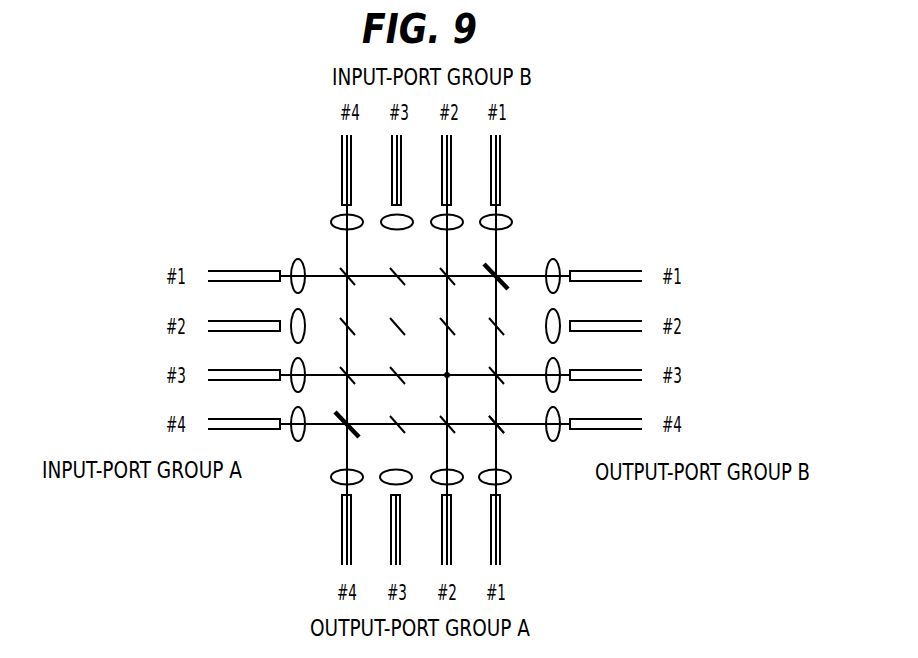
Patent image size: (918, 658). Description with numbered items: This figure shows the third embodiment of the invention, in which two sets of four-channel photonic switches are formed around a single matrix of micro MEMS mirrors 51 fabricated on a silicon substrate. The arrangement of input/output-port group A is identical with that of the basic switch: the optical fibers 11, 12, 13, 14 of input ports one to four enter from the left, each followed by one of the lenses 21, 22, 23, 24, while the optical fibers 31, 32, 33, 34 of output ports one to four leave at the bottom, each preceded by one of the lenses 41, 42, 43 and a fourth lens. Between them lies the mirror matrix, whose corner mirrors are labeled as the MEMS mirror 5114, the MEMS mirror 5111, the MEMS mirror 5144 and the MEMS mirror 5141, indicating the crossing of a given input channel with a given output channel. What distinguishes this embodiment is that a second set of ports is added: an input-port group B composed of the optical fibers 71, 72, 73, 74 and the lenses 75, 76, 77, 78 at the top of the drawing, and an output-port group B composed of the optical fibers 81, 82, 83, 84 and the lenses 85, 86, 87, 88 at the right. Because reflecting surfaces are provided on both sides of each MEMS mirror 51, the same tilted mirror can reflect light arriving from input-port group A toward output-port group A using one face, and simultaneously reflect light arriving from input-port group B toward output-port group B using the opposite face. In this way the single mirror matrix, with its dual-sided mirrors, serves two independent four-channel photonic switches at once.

The optical fiber of input port #1 11 is at (237, 270).
The optical fiber of input port #2 12 is at (237, 320).
The optical fiber of input port #3 13 is at (237, 369).
The optical fiber of input port #4 14 is at (237, 418).
The lens 21 is at (291, 268).
The lens 22 is at (291, 318).
The lens 23 is at (291, 367).
The lens 24 is at (291, 416).
The optical fiber of output port #1 31 is at (501, 528).
The optical fiber of output port #2 32 is at (452, 528).
The optical fiber of output port #3 33 is at (401, 528).
The optical fiber of output port #4 34 is at (352, 528).
The lens 41 is at (505, 481).
The lens 42 is at (455, 483).
The lens 43 is at (404, 483).
The micro MEMS mirror 51 is at (438, 334).
The micro MEMS mirror 51_14 5114 is at (351, 272).
The micro MEMS mirror 51_11 5111 is at (500, 272).
The micro MEMS mirror 51_44 5144 is at (352, 419).
The micro MEMS mirror 51_41 5141 is at (500, 419).
The optical fiber 71 is at (502, 146).
The optical fiber 72 is at (453, 146).
The optical fiber 73 is at (403, 146).
The optical fiber 74 is at (353, 146).
The lens 75 is at (504, 217).
The lens 76 is at (455, 217).
The lens 77 is at (405, 217).
The lens 78 is at (355, 217).
The optical fiber 81 is at (606, 271).
The optical fiber 82 is at (606, 321).
The optical fiber 83 is at (606, 370).
The optical fiber 84 is at (606, 419).
The lens 85 is at (557, 264).
The lens 86 is at (557, 320).
The lens 87 is at (557, 371).
The lens 88 is at (557, 420).